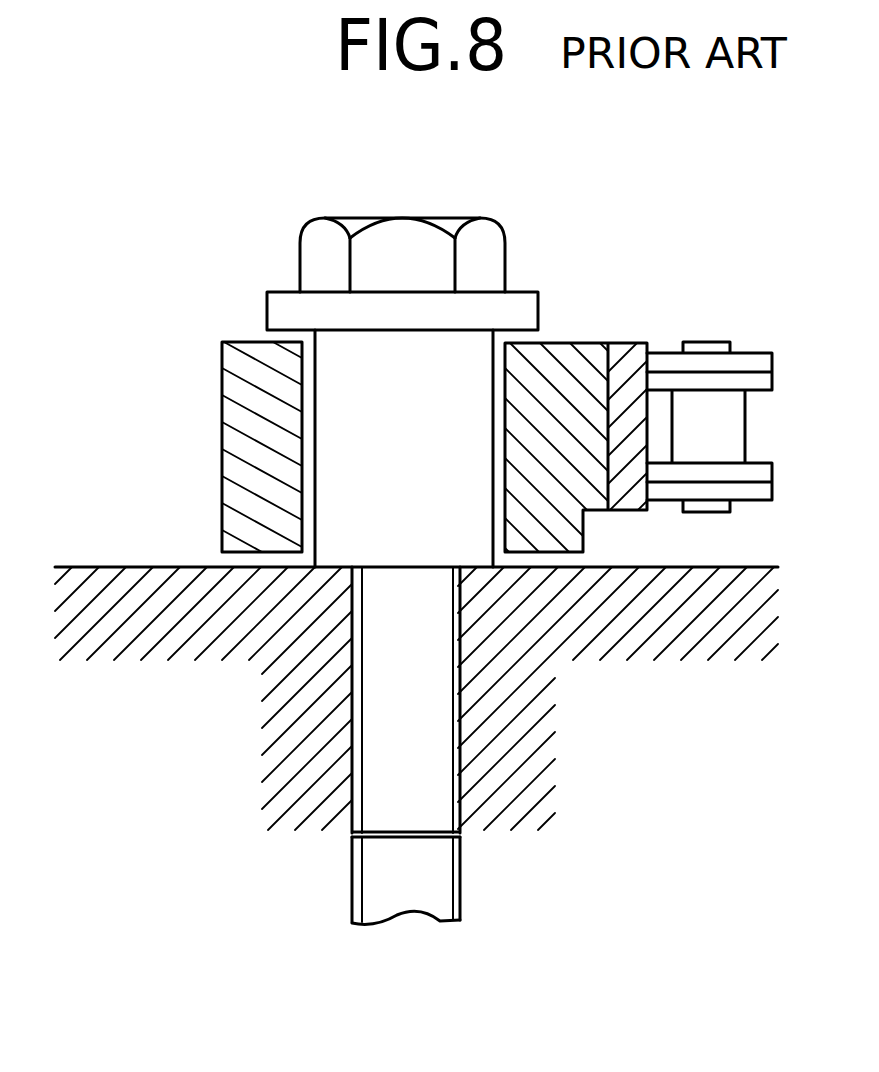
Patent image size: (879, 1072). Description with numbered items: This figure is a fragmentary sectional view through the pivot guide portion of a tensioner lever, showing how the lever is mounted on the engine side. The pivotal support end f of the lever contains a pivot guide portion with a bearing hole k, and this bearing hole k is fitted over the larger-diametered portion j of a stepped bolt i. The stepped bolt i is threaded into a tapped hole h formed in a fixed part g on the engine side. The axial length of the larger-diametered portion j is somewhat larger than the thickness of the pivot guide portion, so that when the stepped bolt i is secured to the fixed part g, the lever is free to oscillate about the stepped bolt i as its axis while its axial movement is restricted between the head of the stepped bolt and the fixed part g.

The pivotal support end f is at (572, 315).
The larger-diametered portion j is at (335, 380).
The bearing hole k is at (298, 428).
The fixed part g is at (153, 567).
The stepped bolt i is at (440, 757).
The tapped hole h is at (462, 900).